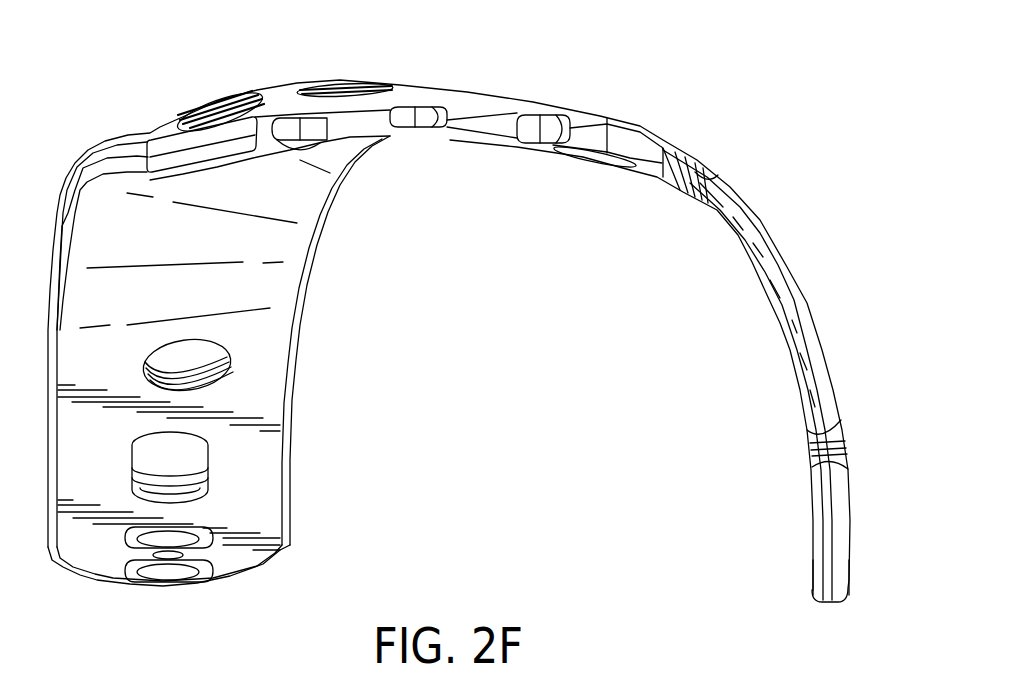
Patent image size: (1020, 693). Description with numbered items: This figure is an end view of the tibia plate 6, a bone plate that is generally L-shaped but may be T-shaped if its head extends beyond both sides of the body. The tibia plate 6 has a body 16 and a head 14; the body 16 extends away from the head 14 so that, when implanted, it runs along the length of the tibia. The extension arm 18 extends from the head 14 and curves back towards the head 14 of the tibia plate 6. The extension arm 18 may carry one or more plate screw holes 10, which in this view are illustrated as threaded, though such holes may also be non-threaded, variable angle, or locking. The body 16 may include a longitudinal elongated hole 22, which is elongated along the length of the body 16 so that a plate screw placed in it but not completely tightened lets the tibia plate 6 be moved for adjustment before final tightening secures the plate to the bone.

The tibia plate 6 is at (222, 56).
The head 14 is at (170, 157).
The body 16 is at (260, 283).
The plate screw hole 10 is at (187, 352).
The longitudinal elongated hole 22 is at (183, 452).
The extension arm 18 is at (820, 370).